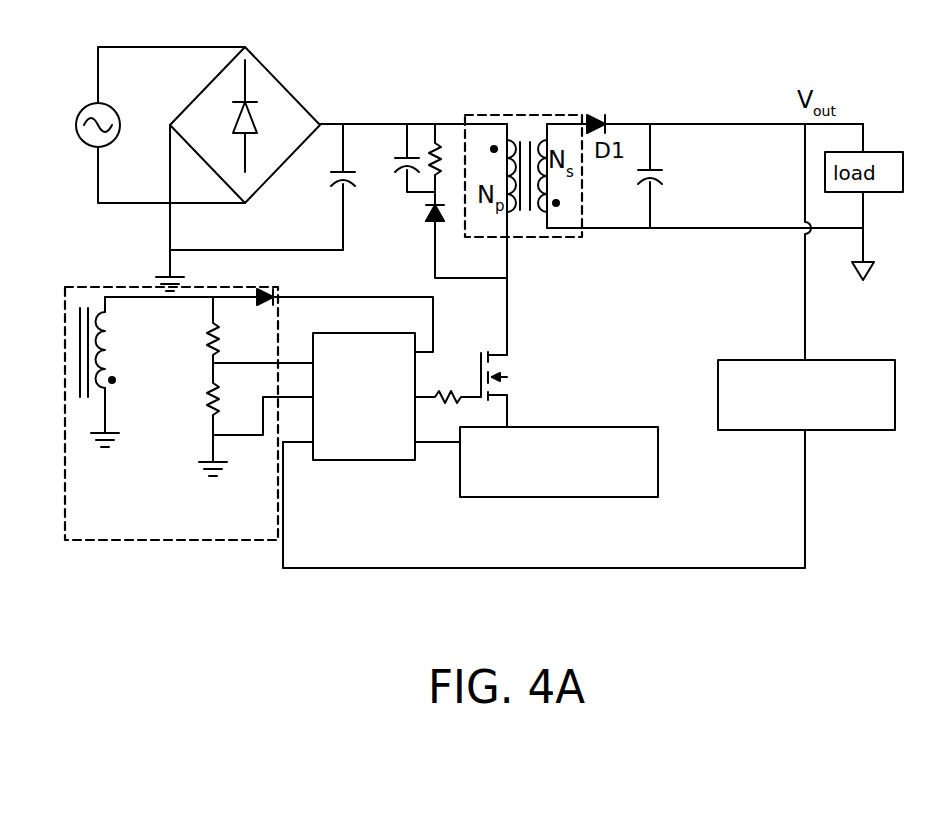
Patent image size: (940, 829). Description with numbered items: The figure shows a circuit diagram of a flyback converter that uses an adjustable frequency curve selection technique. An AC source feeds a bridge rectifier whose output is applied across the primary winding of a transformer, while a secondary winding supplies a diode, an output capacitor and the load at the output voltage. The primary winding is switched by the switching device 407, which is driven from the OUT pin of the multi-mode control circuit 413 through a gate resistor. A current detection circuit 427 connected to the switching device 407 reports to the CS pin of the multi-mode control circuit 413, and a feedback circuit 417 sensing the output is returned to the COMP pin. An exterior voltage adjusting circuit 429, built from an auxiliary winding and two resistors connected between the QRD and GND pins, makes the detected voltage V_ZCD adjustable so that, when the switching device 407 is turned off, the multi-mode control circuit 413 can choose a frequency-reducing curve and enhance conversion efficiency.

The switching device 407 is at (523, 382).
The multi-mode control circuit 413 is at (380, 460).
The feedback circuit 417 is at (857, 430).
The current detection circuit 427 is at (658, 457).
The voltage adjusting circuit 429 is at (177, 540).